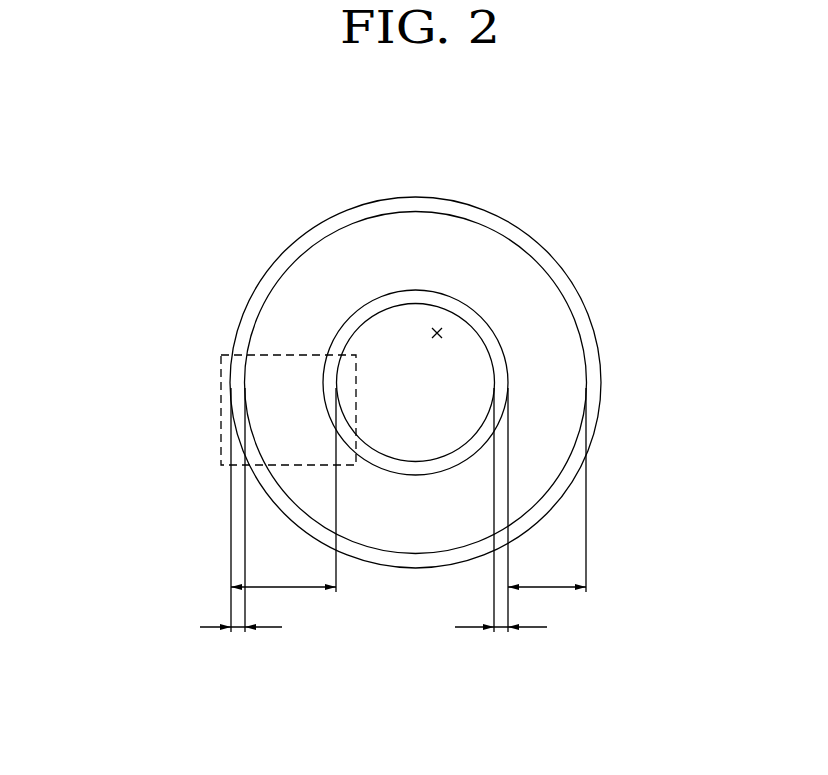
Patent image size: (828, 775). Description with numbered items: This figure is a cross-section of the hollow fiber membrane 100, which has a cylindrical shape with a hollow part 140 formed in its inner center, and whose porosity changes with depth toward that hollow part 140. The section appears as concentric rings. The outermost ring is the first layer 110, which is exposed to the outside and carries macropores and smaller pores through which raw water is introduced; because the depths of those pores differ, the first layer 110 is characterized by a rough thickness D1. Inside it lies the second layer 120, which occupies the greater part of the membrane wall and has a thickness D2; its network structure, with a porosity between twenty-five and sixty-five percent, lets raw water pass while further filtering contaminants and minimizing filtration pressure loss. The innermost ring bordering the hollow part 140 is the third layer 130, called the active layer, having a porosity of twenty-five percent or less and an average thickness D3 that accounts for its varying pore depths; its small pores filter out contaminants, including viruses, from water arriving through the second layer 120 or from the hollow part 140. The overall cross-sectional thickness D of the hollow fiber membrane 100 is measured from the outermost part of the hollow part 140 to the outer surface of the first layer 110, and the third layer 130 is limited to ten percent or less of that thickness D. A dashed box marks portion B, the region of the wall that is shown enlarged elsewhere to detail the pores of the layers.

The hollow fiber membrane 100 is at (192, 227).
The first layer 110 is at (247, 327).
The second layer 120 is at (310, 275).
The third layer 130 is at (485, 327).
The hollow part 140 is at (440, 330).
The portion B is at (221, 410).
The cross-sectional thickness D is at (283, 575).
The rough thickness of the first layer D1 is at (241, 641).
The thickness of the second layer D2 is at (547, 575).
The average thickness of the third layer D3 is at (501, 641).